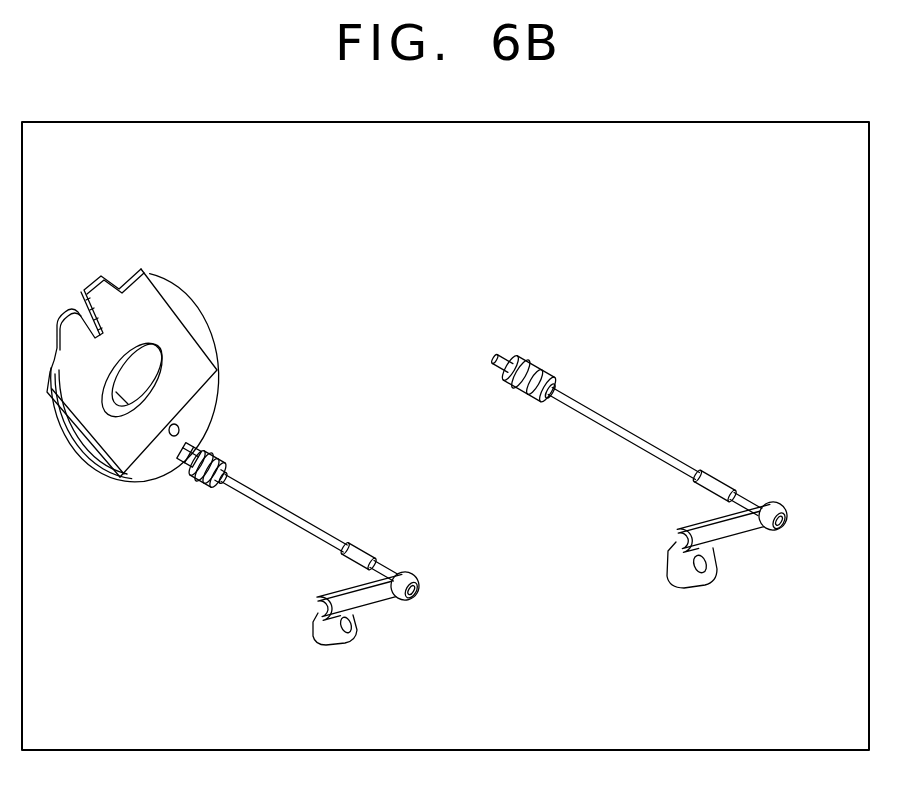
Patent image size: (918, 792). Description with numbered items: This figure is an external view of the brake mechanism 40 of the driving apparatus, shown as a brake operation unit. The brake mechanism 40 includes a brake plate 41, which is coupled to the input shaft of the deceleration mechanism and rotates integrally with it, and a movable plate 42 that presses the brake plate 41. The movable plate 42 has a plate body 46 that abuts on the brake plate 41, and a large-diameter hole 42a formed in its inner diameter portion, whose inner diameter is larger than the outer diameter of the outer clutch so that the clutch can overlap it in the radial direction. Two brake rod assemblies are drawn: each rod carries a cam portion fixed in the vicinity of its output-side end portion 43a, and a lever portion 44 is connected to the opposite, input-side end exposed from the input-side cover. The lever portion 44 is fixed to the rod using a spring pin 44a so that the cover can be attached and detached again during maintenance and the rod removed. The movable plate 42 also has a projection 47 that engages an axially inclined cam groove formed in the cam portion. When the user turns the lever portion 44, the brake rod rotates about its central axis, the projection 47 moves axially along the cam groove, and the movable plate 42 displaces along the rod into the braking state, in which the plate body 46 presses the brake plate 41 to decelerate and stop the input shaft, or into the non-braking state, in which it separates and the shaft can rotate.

The brake mechanism 40 is at (345, 287).
The brake plate 41 is at (190, 298).
The movable plate 42 is at (126, 300).
The large-diameter hole 42a is at (143, 412).
The output-side end portion 43a is at (503, 352).
The lever portion 44 is at (327, 640).
The spring pin 44a is at (737, 483).
The plate body 46 is at (197, 363).
The projection 47 is at (212, 447).